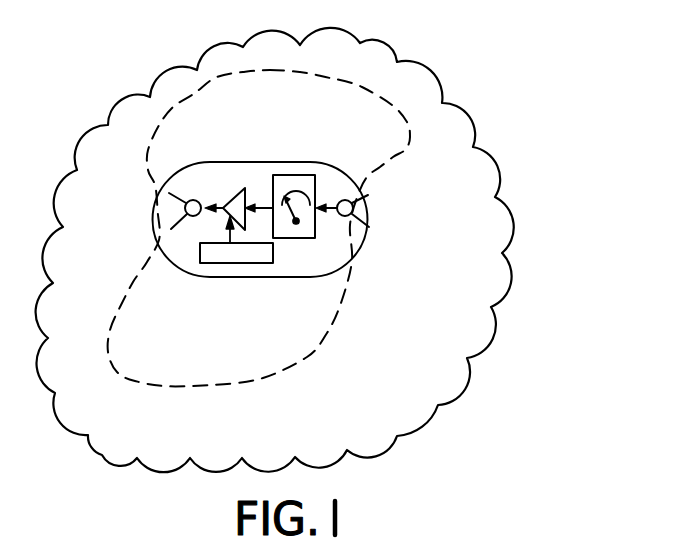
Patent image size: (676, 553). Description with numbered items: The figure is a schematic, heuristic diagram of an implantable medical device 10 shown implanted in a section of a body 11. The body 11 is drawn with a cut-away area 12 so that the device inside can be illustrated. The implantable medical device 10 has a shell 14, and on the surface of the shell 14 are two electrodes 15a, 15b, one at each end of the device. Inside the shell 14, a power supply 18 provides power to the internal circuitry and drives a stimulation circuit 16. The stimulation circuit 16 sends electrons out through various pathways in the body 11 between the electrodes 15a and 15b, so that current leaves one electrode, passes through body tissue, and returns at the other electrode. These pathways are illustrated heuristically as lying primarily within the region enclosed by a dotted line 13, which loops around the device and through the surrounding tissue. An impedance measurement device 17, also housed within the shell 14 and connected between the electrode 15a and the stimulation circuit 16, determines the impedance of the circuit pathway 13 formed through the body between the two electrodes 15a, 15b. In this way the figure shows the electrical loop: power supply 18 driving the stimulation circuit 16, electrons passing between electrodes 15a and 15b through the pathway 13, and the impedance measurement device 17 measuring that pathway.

The implantable medical device 10 is at (307, 213).
The body 11 is at (452, 290).
The cut-away area 12 is at (293, 250).
The dotted line 13 is at (364, 86).
The shell 14 is at (292, 278).
The electrode 15a is at (355, 201).
The electrode 15b is at (196, 199).
The stimulation circuit 16 is at (230, 198).
The impedance measurement device 17 is at (309, 175).
The power supply 18 is at (229, 265).